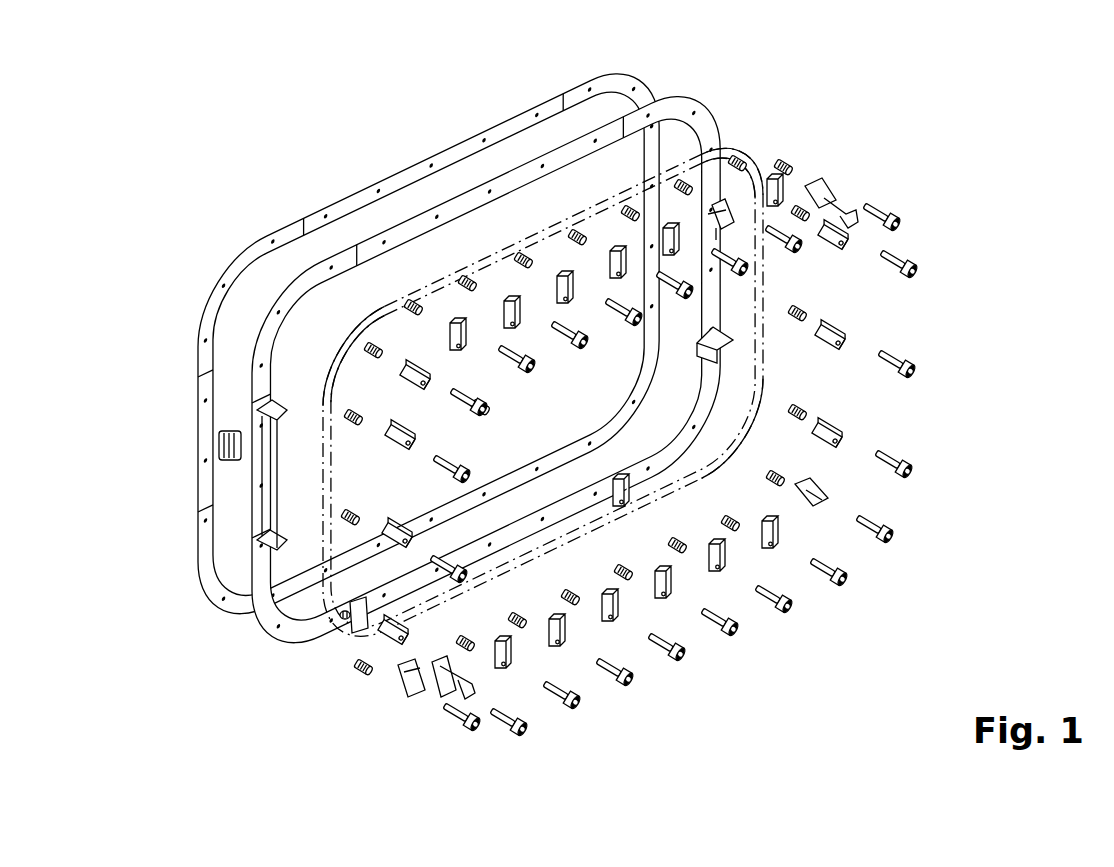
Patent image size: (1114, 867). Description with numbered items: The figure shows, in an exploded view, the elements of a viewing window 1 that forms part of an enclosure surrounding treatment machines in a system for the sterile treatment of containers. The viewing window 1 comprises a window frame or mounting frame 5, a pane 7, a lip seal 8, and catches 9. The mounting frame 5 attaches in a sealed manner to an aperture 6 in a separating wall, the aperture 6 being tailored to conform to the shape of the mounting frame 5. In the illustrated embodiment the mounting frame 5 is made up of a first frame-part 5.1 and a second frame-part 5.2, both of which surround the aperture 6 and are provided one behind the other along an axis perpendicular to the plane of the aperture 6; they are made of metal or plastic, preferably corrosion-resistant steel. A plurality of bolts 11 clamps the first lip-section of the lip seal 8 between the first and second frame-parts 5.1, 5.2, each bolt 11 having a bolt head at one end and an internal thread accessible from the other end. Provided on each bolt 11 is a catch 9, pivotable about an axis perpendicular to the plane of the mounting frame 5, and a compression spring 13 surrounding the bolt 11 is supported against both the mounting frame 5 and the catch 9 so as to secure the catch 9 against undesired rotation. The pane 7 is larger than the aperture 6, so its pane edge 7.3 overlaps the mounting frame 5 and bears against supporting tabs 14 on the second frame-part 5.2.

The viewing window 1 is at (172, 152).
The mounting frame 5 is at (632, 71).
The first frame-part 5.1 is at (207, 303).
The second frame-part 5.2 is at (523, 175).
The aperture 6 is at (410, 263).
The pane 7 is at (715, 428).
The pane edge 7.3 is at (323, 623).
The lip seal 8 is at (217, 455).
The catch 9 is at (440, 687).
The bolt 11 is at (828, 565).
The compression spring 13 is at (805, 312).
The supporting tab 14 is at (260, 533).